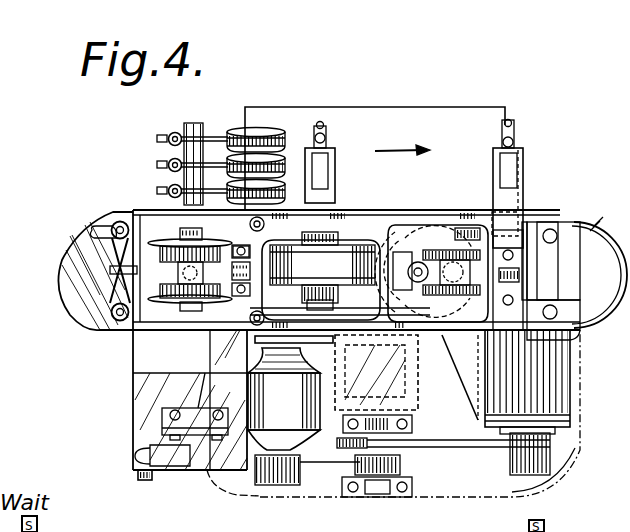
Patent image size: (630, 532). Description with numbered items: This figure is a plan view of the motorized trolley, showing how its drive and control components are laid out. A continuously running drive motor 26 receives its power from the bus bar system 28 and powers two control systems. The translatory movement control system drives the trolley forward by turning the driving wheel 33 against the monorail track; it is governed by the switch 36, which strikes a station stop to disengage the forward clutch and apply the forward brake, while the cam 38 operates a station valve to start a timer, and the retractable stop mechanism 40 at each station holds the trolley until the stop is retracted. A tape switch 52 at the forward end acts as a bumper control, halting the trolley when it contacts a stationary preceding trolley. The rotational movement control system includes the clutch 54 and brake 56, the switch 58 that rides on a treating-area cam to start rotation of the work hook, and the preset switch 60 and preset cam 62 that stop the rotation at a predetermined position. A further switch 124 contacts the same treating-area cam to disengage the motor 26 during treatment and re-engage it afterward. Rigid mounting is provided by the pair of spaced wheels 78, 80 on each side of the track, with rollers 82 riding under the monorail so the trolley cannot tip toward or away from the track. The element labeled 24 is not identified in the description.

The base frame 24 is at (483, 521).
The drive motor 26 is at (556, 381).
The bus bar system 28 is at (243, 130).
The driving wheel 33 is at (350, 217).
The switch 36 is at (146, 481).
The cam 38 is at (162, 418).
The retractable stop mechanism 40 is at (548, 530).
The tape switch 52 is at (572, 220).
The clutch 54 is at (416, 414).
The brake 56 is at (420, 372).
The switch 58 is at (518, 130).
The preset switch 60 is at (422, 240).
The preset cam 62 is at (440, 250).
The wheel 78 is at (472, 216).
The wheel 80 is at (158, 298).
The rollers 82 is at (244, 246).
The switch 124 is at (330, 131).